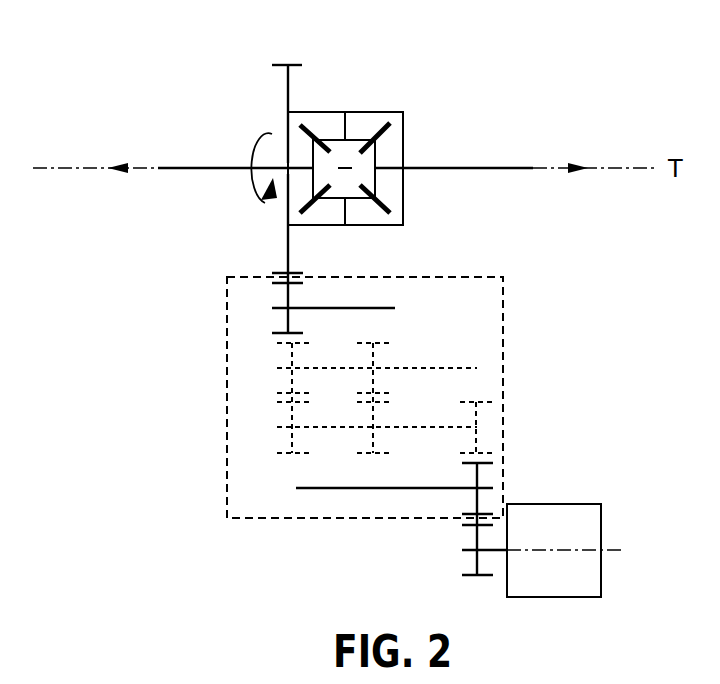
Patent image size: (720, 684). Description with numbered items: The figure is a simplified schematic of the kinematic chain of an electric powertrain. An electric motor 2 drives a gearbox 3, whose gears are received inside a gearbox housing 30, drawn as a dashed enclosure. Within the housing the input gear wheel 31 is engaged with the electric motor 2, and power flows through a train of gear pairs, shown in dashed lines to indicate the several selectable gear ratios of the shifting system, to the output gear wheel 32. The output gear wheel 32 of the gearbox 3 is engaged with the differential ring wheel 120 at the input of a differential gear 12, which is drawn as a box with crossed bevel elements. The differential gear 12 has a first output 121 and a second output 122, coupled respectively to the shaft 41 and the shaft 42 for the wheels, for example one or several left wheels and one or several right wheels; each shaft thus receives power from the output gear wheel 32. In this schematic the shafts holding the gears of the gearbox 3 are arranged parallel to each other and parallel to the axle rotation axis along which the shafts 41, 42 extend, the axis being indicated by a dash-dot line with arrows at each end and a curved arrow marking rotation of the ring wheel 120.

The electric motor 2 is at (607, 524).
The gearbox 3 is at (509, 329).
The differential gear 12 is at (381, 119).
The gearbox housing 30 is at (472, 277).
The input gear wheel 31 is at (478, 473).
The output gear wheel 32 is at (285, 296).
The shaft 41 is at (203, 167).
The shaft 42 is at (497, 167).
The differential ring wheel 120 is at (286, 252).
The first output 121 is at (318, 130).
The second output 122 is at (396, 120).